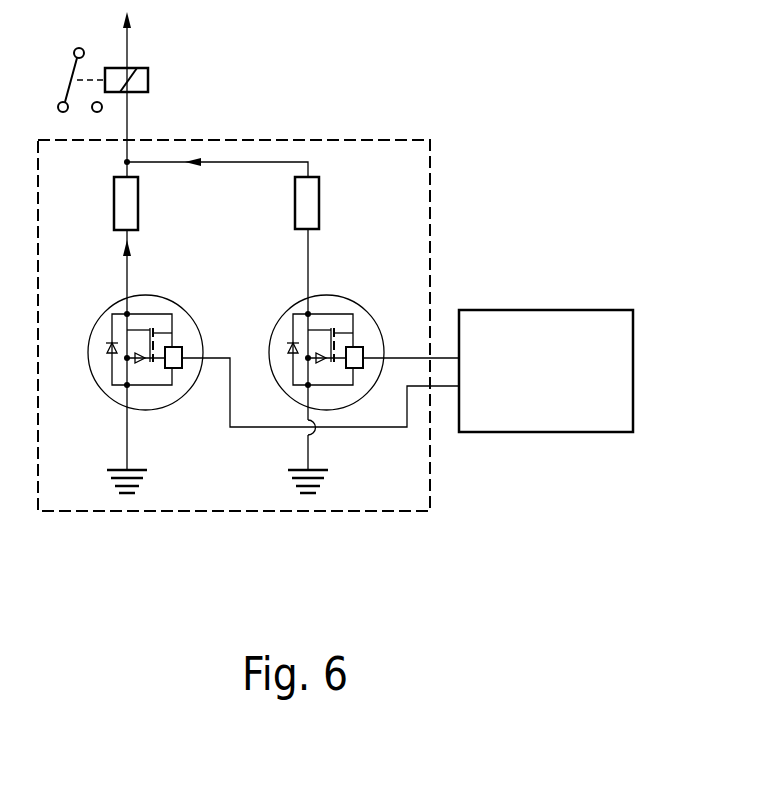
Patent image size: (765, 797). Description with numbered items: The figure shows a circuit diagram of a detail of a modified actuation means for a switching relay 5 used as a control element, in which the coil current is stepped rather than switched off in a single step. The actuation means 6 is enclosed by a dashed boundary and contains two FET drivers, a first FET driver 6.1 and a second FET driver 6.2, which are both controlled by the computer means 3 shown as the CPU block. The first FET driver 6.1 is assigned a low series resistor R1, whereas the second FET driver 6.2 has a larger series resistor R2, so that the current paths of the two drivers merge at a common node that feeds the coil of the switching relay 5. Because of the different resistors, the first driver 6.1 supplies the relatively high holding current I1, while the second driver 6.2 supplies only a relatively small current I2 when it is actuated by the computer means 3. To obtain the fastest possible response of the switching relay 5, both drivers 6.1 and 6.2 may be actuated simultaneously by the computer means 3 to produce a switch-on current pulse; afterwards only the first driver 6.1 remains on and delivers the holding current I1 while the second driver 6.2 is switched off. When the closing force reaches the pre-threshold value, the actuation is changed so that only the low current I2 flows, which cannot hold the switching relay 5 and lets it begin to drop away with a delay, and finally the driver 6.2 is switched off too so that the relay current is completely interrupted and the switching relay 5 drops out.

The switching relay 5 is at (170, 60).
The FET driver arrangement 6 is at (430, 468).
The first FET driver 6.1 is at (177, 305).
The second FET driver 6.2 is at (358, 307).
The computer means 3 is at (563, 310).
The series resistor R1 is at (140, 202).
The series resistor R2 is at (322, 202).
The holding current I1 is at (113, 272).
The reduced current I2 is at (217, 175).